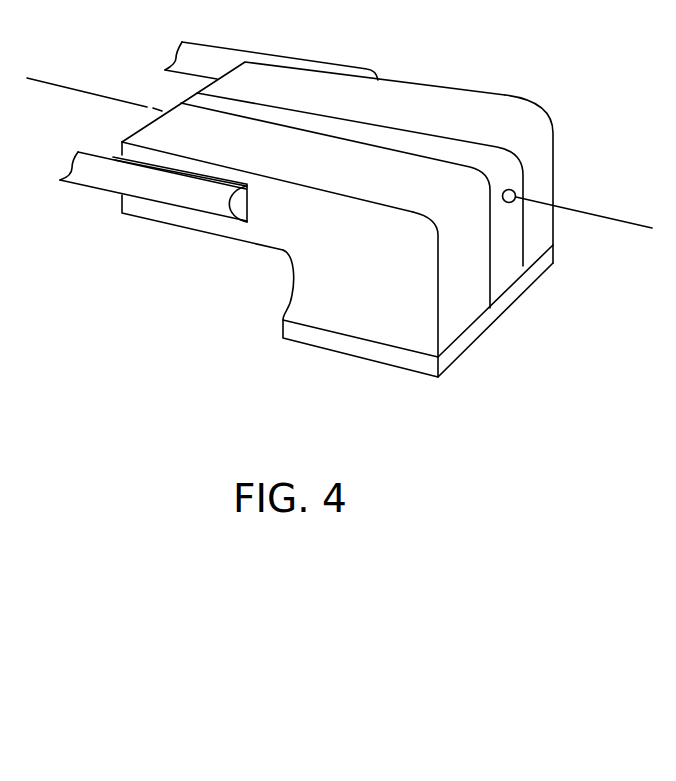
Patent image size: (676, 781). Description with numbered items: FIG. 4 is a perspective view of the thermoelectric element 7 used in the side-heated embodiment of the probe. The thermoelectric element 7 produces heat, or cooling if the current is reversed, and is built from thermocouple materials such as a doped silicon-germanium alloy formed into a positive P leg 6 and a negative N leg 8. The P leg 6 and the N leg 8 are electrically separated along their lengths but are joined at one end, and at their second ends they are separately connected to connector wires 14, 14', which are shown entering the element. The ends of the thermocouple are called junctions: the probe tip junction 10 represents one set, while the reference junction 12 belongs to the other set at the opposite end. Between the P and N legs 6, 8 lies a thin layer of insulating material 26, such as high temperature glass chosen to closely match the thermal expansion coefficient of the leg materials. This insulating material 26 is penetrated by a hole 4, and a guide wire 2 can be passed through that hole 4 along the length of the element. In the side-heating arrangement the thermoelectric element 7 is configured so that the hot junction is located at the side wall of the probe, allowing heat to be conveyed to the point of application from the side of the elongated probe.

The guide wire 2 is at (603, 216).
The hole 4 is at (508, 203).
The P leg 6 is at (544, 133).
The thermoelectric element 7 is at (503, 89).
The N leg 8 is at (446, 222).
The probe tip junction 10 is at (364, 348).
The reference junction 12 is at (249, 187).
The connector wire 14 is at (271, 43).
The connector wire 14' is at (148, 187).
The insulating material 26 is at (505, 277).